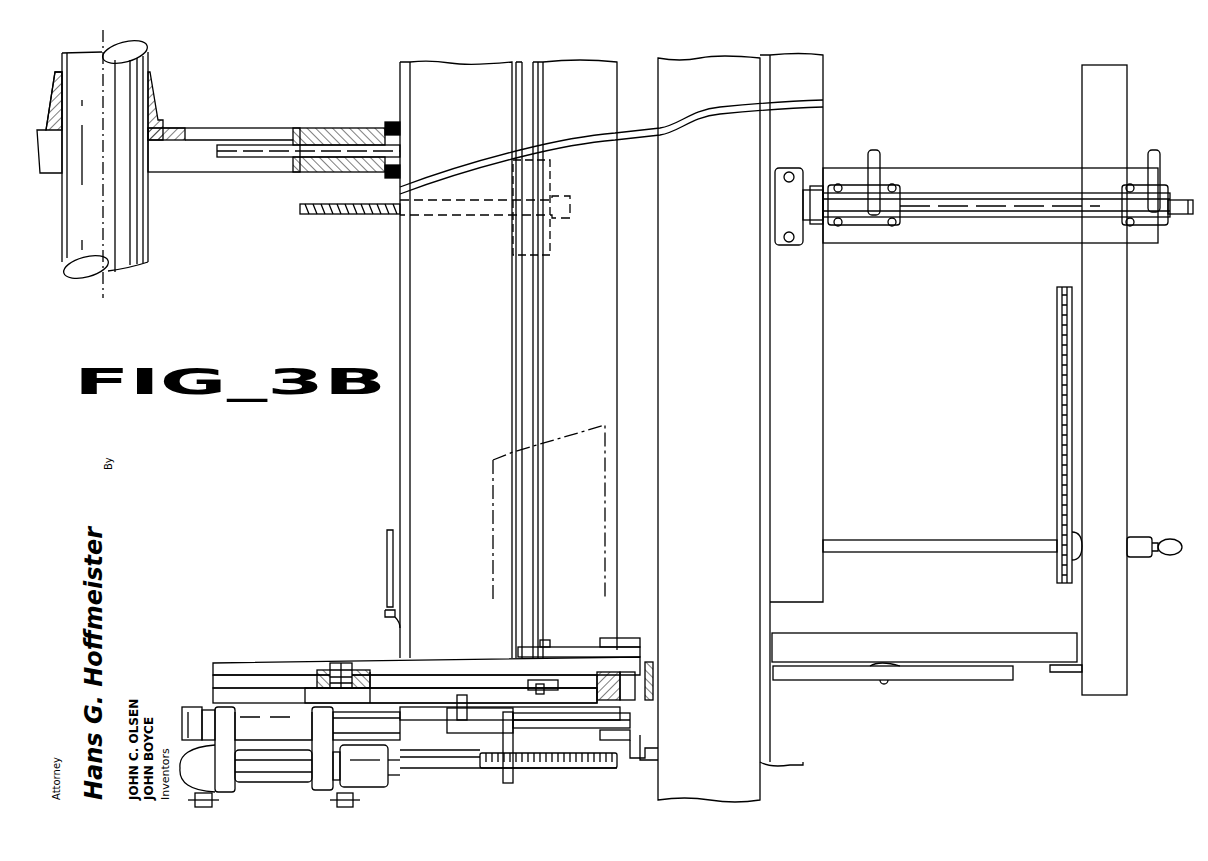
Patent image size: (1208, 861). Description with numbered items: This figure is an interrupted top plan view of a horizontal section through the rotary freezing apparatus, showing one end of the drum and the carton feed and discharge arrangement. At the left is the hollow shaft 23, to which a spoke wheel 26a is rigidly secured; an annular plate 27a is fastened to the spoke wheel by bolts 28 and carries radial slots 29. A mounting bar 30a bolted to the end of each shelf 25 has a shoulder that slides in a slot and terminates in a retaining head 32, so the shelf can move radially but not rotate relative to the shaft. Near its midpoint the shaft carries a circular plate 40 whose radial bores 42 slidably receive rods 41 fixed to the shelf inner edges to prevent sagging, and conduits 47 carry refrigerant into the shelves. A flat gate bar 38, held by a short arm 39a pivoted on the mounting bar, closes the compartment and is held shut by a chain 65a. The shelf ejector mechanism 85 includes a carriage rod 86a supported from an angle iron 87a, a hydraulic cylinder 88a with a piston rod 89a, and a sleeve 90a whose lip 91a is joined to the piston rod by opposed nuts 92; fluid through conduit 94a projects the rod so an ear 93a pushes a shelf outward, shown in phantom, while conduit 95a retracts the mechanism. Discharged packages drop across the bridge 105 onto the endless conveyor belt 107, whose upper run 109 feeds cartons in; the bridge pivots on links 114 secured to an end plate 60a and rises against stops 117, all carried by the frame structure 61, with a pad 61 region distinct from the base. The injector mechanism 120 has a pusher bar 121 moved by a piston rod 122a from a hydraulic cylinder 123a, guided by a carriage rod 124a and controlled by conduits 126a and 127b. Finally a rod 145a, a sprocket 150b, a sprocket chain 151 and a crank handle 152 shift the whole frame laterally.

The hollow shaft 23 is at (132, 250).
The circular plate 40 is at (222, 130).
The rods 41 is at (228, 152).
The radial bores 42 is at (330, 130).
The chain 65a is at (395, 212).
The bridge 105 is at (585, 294).
The flat bars 38 is at (527, 353).
The upper run 109 is at (726, 342).
The endless conveyor belt 107 is at (770, 299).
The pusher bar 121 is at (800, 402).
The injector mechanism 120 is at (968, 190).
The piston rod 122a is at (823, 195).
The conduit 127b is at (880, 165).
The conduit 126a is at (1160, 165).
The carriage rod 124a is at (1180, 218).
The hydraulic cylinder 123a is at (940, 215).
The sprocket chain 151 is at (1057, 405).
The sprocket 150b is at (1078, 540).
The crank handle 152 is at (1162, 555).
The rod 145a is at (970, 525).
The spoke wheel 26a is at (258, 636).
The annular plate 27a is at (358, 675).
The bolts 28 is at (332, 668).
The radial slots 29 is at (412, 680).
The bar 30a is at (450, 665).
The ejector mechanism 85 is at (293, 755).
The hydraulic cylinder 88a is at (305, 770).
The piston rod 89a is at (415, 770).
The retaining head 32 is at (418, 705).
The lip 91a is at (565, 730).
The ear 93a is at (465, 694).
The opposed nuts 92 is at (508, 785).
The sleeve 90a is at (495, 740).
The carriage rod 86a is at (580, 770).
The conduit 94a is at (212, 806).
The conduit 95a is at (347, 808).
The conduits 47 is at (385, 563).
The shelves 25 is at (505, 470).
The short arm 39a is at (530, 672).
The stops 117 is at (555, 657).
The links 114 is at (620, 645).
The plate 60a is at (640, 665).
The frame structure 61 is at (660, 684).
The angle iron 87a is at (658, 740).